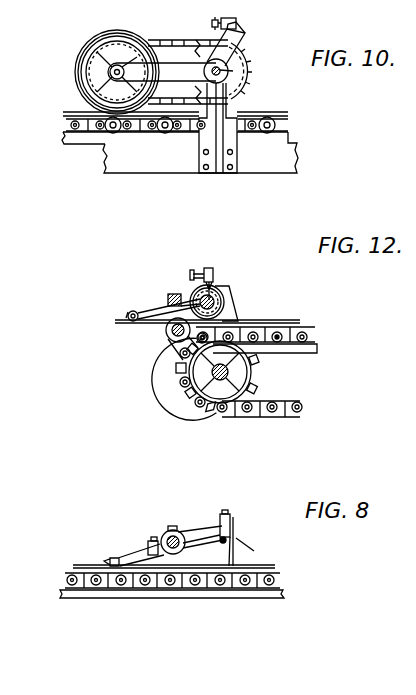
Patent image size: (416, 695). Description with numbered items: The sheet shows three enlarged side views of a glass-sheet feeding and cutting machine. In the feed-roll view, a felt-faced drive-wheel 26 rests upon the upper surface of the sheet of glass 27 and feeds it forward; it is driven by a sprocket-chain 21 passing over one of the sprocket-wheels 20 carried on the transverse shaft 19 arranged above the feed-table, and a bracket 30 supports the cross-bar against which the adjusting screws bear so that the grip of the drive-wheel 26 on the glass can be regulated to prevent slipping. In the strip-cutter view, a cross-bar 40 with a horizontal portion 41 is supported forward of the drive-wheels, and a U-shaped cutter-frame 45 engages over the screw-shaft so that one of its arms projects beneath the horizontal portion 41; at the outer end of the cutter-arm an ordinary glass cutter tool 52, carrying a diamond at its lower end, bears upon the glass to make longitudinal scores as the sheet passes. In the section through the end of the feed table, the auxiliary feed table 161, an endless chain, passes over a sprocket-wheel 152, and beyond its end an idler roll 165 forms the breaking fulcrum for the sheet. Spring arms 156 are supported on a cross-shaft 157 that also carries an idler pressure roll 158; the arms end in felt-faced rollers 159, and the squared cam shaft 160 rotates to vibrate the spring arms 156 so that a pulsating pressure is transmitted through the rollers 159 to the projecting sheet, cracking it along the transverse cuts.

In FIG. 10, the drive-wheel 26 is at (125, 33).
In FIG. 10, the sprocket-chain 21 is at (172, 40).
In FIG. 10, the bracket 30 is at (243, 44).
In FIG. 10, the shaft 19 is at (245, 70).
In FIG. 10, the sprocket-wheel 20 is at (246, 82).
In FIG. 12, the sheet of glass 27 is at (117, 326).
In FIG. 12, the auxiliary feed table 161 is at (243, 419).
In FIG. 12, the sprocket-wheel 152 is at (190, 391).
In FIG. 12, the idler roll 165 is at (174, 341).
In FIG. 12, the idler pressure roll 158 is at (218, 291).
In FIG. 12, the cross-shaft 157 is at (214, 302).
In FIG. 12, the spring arm 156 is at (150, 310).
In FIG. 12, the cam shaft 160 is at (176, 294).
In FIG. 12, the felt-faced roller 159 is at (133, 310).
In FIG. 8, the glass cutter tool 52 is at (125, 557).
In FIG. 8, the U-shaped cutter-frame 45 is at (188, 548).
In FIG. 8, the cross-bar 40 is at (233, 525).
In FIG. 8, the horizontal portion 41 is at (253, 550).